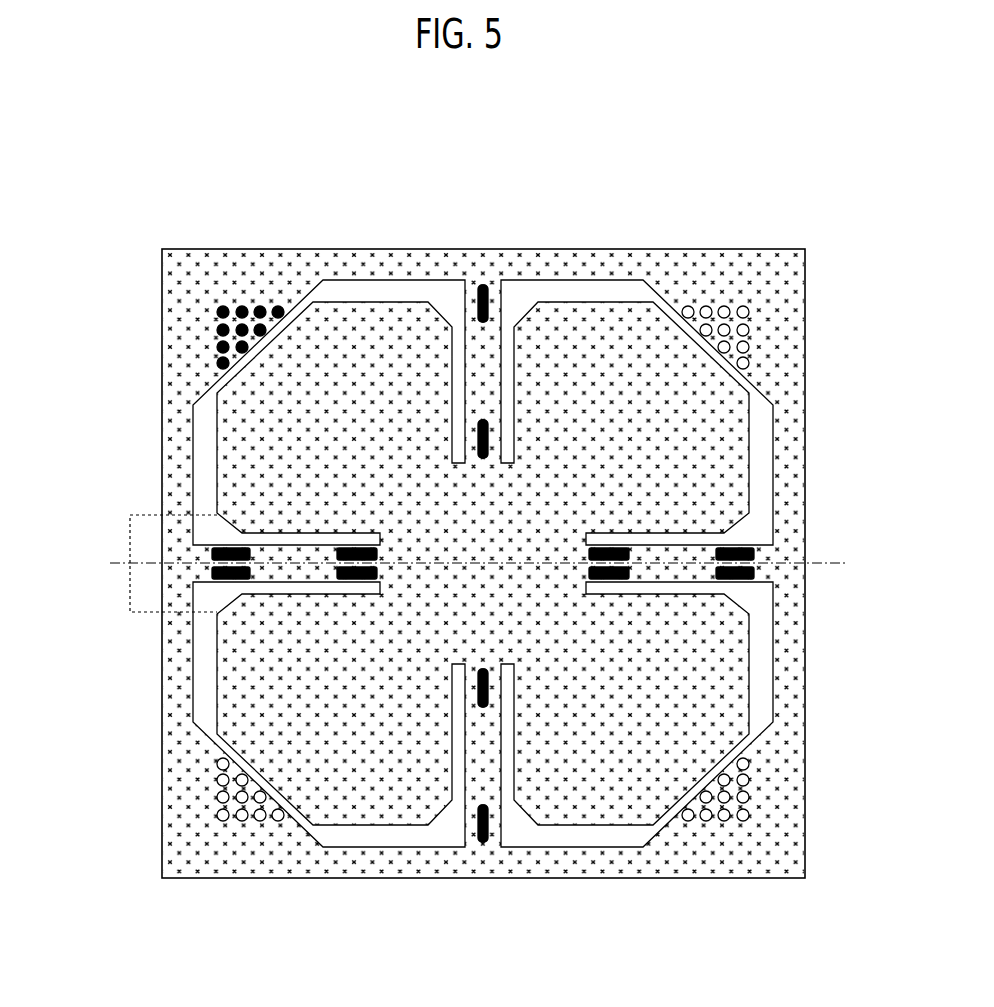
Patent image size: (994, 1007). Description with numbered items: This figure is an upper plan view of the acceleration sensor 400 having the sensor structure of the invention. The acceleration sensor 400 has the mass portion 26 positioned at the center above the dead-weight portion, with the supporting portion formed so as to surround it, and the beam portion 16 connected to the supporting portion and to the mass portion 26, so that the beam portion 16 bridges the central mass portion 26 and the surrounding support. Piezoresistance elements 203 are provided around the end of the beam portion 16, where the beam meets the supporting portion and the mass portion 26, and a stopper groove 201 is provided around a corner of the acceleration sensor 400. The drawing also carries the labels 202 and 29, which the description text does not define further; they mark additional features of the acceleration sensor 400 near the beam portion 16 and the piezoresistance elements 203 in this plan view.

The acceleration sensor 400 is at (713, 188).
The mass portion 26 is at (467, 588).
The beam portion 16 is at (287, 573).
The stopper groove 201 is at (234, 305).
The region 202 is at (130, 533).
The piezoresistance elements 203 is at (357, 546).
The slit 29 is at (183, 573).